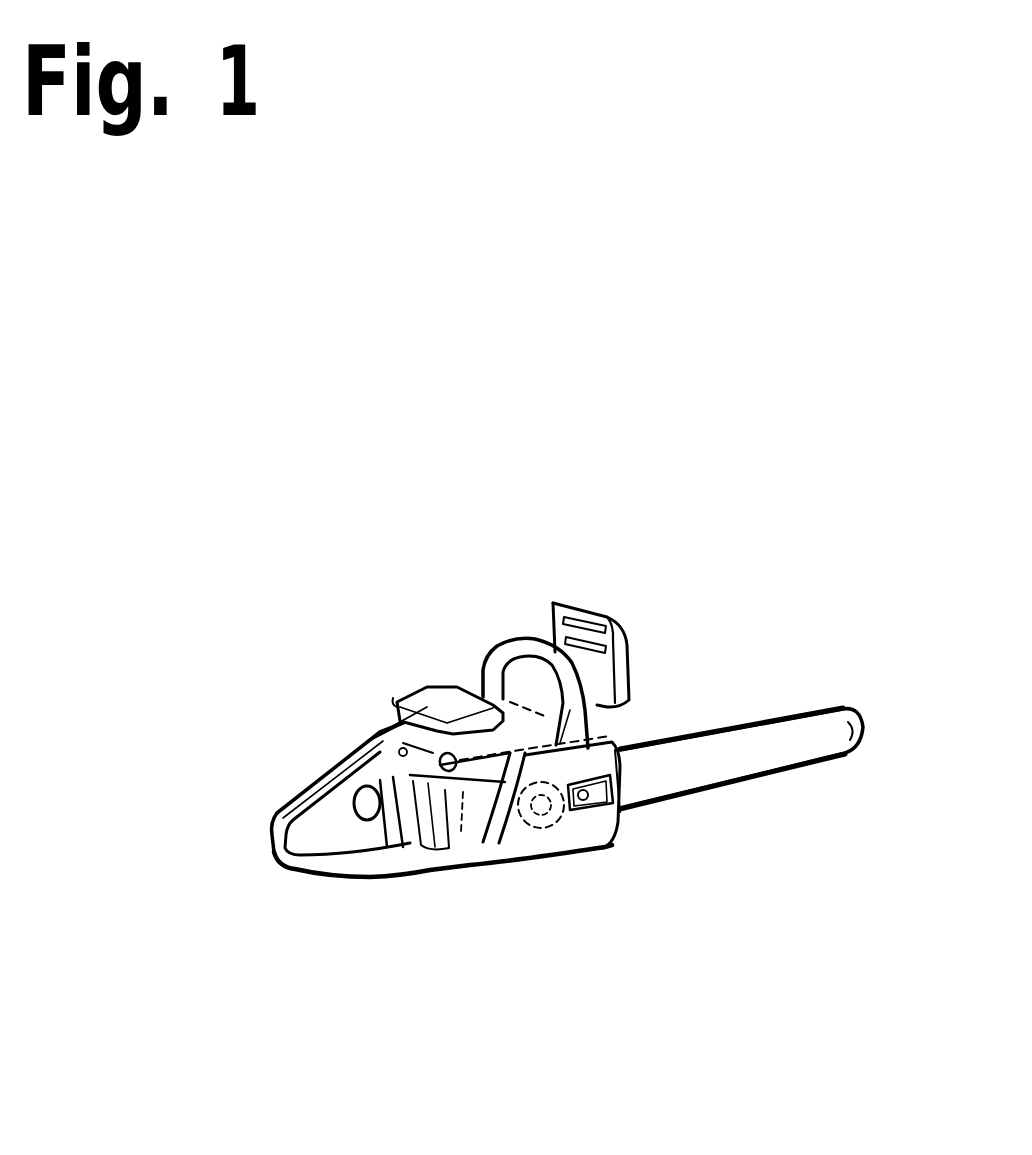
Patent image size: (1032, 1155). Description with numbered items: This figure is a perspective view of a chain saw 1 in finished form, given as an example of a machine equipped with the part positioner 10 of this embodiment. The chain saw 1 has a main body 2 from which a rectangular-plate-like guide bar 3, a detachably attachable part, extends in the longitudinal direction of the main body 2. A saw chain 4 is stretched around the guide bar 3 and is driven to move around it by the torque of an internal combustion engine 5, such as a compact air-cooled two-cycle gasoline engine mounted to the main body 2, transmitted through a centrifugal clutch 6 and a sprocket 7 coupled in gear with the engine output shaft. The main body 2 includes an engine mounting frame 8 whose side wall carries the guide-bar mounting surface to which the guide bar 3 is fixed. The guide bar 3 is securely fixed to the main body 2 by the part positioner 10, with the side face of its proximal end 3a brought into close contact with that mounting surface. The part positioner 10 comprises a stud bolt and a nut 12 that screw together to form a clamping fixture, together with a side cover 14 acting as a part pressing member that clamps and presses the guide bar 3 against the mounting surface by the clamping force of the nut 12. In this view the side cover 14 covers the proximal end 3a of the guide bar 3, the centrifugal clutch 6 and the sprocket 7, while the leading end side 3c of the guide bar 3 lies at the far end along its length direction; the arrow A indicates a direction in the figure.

The chain saw 1 is at (677, 628).
The main body 2 is at (535, 863).
The guide bar 3 is at (751, 754).
The proximal end 3a is at (617, 822).
The leading end side 3c is at (850, 734).
The saw chain 4 is at (757, 716).
The internal combustion engine 5 is at (521, 722).
The centrifugal clutch 6 is at (550, 831).
The sprocket 7 is at (505, 830).
The engine mounting frame 8 is at (478, 799).
The part positioner 10 is at (613, 833).
The nut 12 is at (620, 780).
The side cover 14 is at (573, 822).
The direction arrow A is at (628, 877).